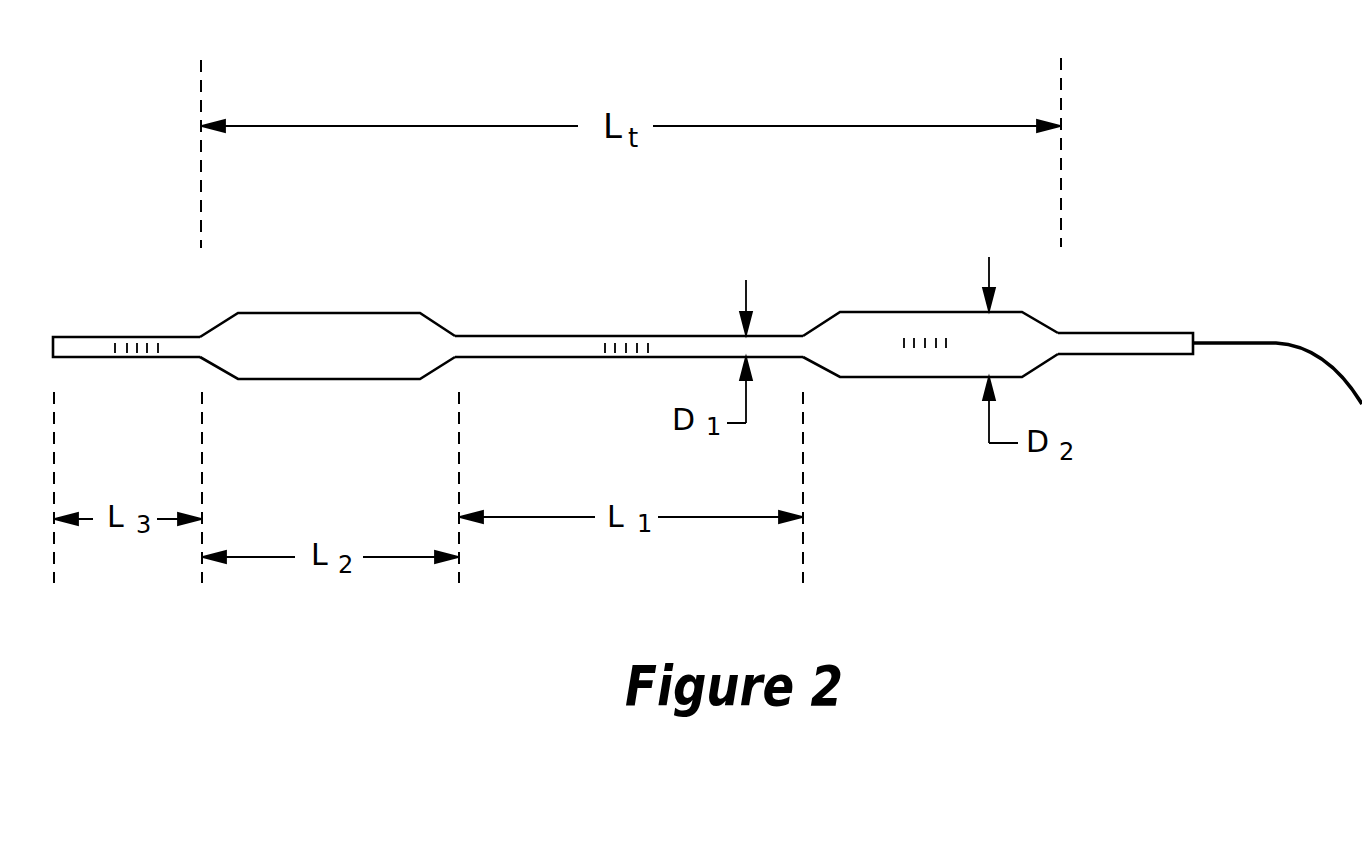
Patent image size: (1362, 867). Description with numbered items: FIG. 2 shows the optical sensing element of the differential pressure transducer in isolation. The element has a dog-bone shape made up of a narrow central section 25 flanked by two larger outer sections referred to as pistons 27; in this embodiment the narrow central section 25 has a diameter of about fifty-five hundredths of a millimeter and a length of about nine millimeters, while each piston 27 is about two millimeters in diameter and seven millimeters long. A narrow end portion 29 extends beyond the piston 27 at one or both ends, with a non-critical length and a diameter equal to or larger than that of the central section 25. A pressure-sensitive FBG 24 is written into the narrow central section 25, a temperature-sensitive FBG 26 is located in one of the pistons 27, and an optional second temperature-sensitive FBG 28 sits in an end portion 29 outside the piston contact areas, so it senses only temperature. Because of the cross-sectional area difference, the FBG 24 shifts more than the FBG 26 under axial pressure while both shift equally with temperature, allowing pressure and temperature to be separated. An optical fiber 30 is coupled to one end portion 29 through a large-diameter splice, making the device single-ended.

The pressure-sensitive FBG 24 is at (623, 340).
The narrow central section 25 is at (518, 347).
The temperature-sensitive FBG 26 is at (935, 340).
The piston 27 is at (342, 333).
The second temperature-sensitive FBG 28 is at (135, 350).
The narrow end portion 29 is at (78, 348).
The optical fiber 30 is at (1270, 340).